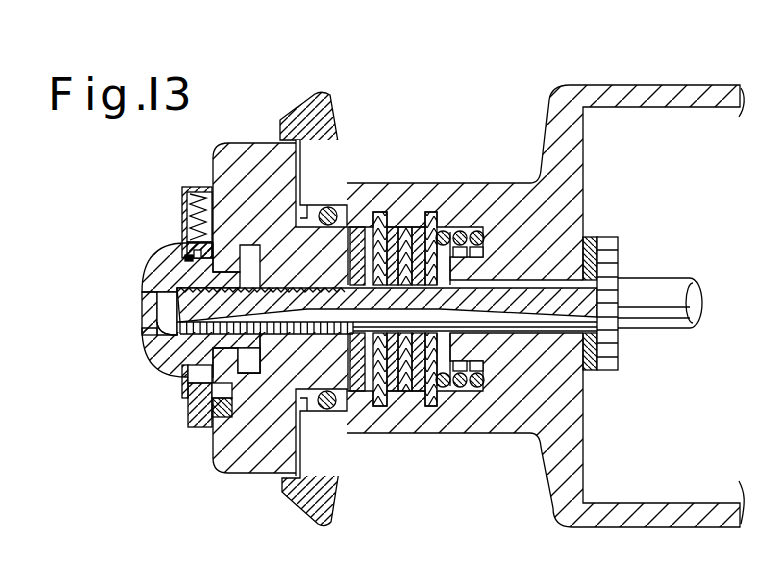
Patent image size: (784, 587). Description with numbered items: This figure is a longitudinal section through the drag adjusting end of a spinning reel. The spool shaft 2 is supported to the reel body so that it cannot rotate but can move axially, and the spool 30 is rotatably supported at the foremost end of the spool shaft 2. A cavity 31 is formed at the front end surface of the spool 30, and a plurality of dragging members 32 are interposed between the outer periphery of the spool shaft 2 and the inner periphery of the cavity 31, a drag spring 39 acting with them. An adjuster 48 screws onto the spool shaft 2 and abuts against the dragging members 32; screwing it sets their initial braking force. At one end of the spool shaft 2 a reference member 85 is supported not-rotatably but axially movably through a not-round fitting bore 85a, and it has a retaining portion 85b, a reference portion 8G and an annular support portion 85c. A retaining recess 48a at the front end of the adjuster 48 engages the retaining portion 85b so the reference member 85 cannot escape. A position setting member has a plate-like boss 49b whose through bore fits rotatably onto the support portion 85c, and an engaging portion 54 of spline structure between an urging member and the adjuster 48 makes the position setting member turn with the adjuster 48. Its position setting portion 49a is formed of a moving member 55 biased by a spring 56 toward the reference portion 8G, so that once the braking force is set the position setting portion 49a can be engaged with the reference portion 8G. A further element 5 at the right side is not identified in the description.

The spool shaft 2 is at (520, 295).
The drive gear 5 is at (690, 303).
The spool 30 is at (330, 97).
The cavity 31 is at (442, 231).
The dragging members 32 is at (398, 216).
The drag spring 39 is at (461, 231).
The adjuster 48 is at (257, 168).
The retaining recess 48a is at (252, 366).
The position setting portion 49a is at (193, 252).
The plate-like boss 49b is at (195, 403).
The engaging portion 54 is at (221, 416).
The moving member 55 is at (185, 232).
The spring 56 is at (190, 240).
The reference member 85 is at (140, 288).
The not-round fitting bore 85a is at (172, 333).
The retaining portion 85b is at (257, 372).
The annular support portion 85c is at (200, 372).
The reference portion 8G is at (192, 260).